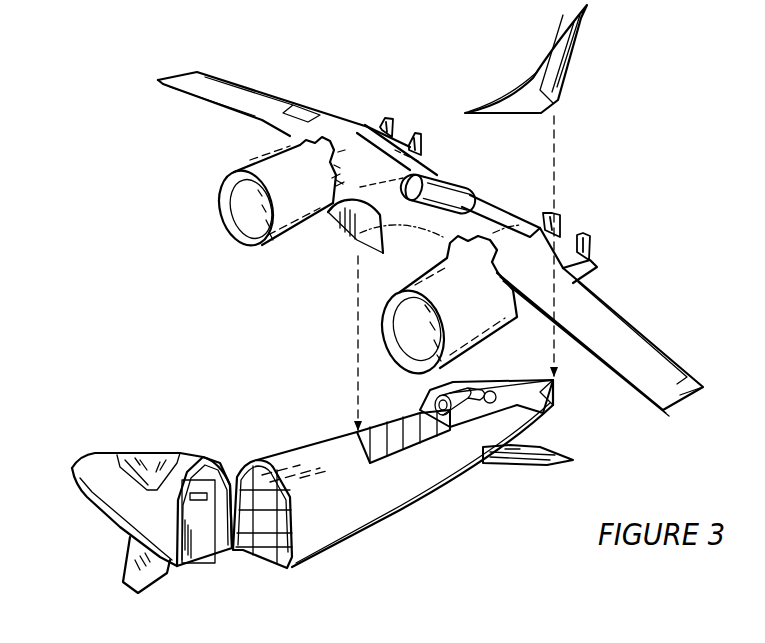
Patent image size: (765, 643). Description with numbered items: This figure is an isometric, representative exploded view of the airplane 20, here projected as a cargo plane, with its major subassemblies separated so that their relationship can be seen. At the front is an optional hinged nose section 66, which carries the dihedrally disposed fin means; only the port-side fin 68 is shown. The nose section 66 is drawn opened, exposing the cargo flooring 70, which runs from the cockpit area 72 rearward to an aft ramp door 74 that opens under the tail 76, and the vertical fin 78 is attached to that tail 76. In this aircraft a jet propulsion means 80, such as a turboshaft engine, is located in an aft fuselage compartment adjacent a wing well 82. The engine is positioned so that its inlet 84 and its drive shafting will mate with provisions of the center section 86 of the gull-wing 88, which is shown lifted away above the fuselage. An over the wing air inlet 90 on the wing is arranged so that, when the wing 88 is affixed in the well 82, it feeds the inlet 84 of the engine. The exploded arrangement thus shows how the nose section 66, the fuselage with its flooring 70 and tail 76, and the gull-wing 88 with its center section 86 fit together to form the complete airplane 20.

The airplane 20 is at (267, 335).
The hinged nose section 66 is at (97, 482).
The fin 68 is at (152, 587).
The cargo flooring 70 is at (273, 553).
The cockpit area 72 is at (212, 473).
The aft ramp door 74 is at (517, 465).
The tail 76 is at (532, 403).
The vertical fin 78 is at (535, 68).
The jet propulsion means 80 is at (470, 393).
The wing well 82 is at (368, 427).
The inlet 84 is at (430, 407).
The center section 86 is at (343, 227).
The gull-wing 88 is at (580, 217).
The over the wing air inlet 90 is at (453, 182).